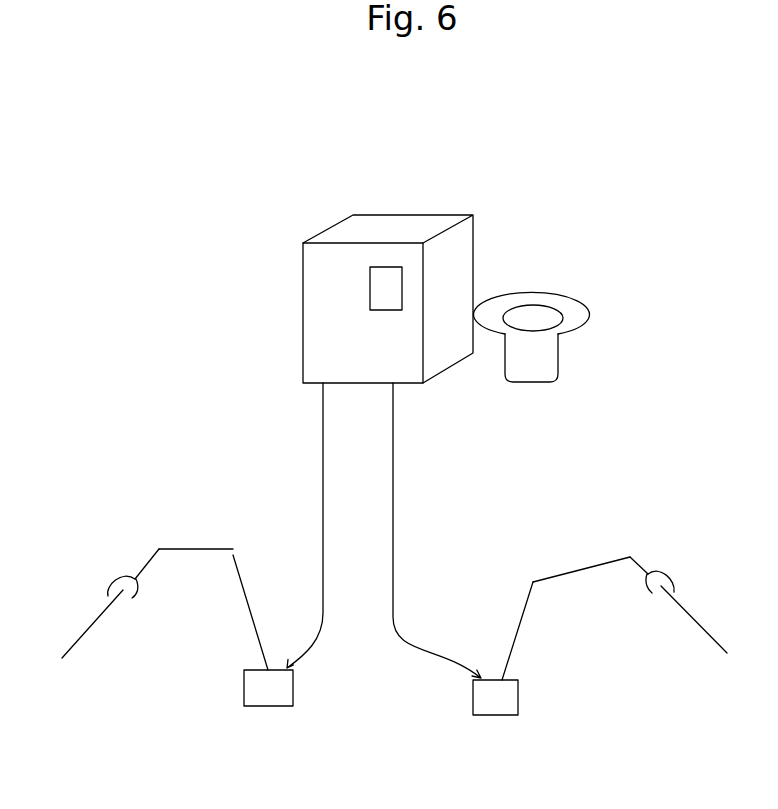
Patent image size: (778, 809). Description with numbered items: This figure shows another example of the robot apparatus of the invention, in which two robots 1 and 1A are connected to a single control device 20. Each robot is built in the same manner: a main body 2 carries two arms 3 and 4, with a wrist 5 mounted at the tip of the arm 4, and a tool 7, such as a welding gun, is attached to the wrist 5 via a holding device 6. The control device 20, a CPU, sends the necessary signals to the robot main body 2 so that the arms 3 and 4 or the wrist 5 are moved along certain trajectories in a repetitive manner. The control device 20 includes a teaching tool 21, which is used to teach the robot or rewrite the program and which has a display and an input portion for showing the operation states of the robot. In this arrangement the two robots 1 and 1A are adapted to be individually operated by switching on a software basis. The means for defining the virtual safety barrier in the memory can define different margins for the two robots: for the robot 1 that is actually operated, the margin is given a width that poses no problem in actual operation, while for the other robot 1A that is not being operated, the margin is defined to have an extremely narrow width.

The robot 1 is at (262, 720).
The robot 1A is at (486, 731).
The main body 2 is at (257, 687).
The arm 3 is at (247, 597).
The arm 4 is at (190, 549).
The wrist 5 is at (143, 565).
The holding device 6 is at (127, 597).
The tool 7 is at (77, 633).
The control device 20 is at (280, 231).
The teaching tool 21 is at (575, 307).